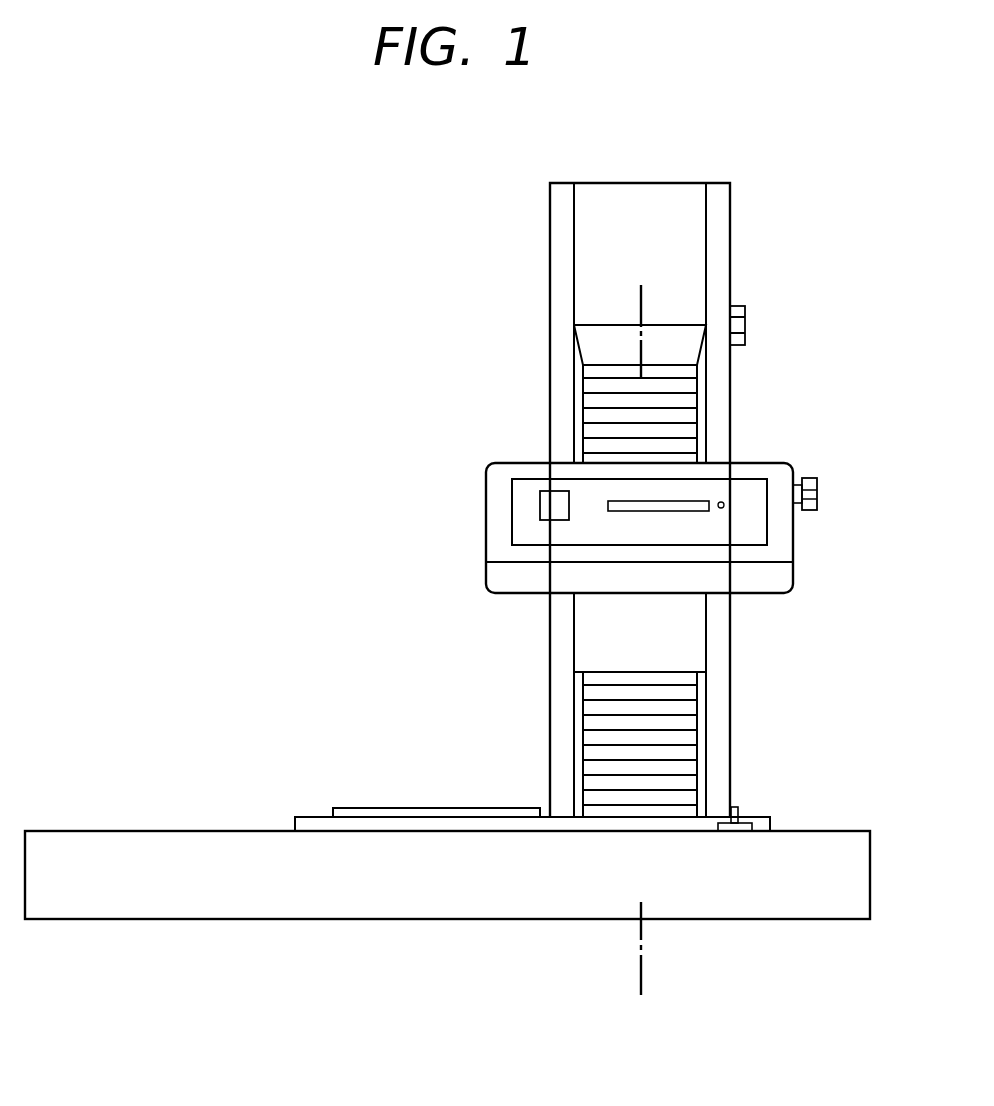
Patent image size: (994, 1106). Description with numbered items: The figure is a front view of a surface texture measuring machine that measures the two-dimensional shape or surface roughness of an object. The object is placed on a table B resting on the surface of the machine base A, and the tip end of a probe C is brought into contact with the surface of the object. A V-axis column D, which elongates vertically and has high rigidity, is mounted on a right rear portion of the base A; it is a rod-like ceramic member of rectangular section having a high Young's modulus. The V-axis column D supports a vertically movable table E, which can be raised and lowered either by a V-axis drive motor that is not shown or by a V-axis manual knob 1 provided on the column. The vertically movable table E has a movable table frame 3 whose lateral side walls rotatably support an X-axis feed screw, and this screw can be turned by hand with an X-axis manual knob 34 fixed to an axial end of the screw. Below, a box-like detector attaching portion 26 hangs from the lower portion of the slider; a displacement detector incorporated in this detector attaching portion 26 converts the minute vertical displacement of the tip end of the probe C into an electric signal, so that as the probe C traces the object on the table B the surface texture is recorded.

The V-axis manual knob 1 is at (740, 327).
The movable table frame 3 is at (641, 285).
The detector attaching portion 26 is at (690, 637).
The X-axis manual knob 34 is at (818, 483).
The base A is at (105, 838).
The table B is at (402, 808).
The probe C is at (582, 679).
The V-axis column D is at (690, 217).
The vertically movable table E is at (520, 495).